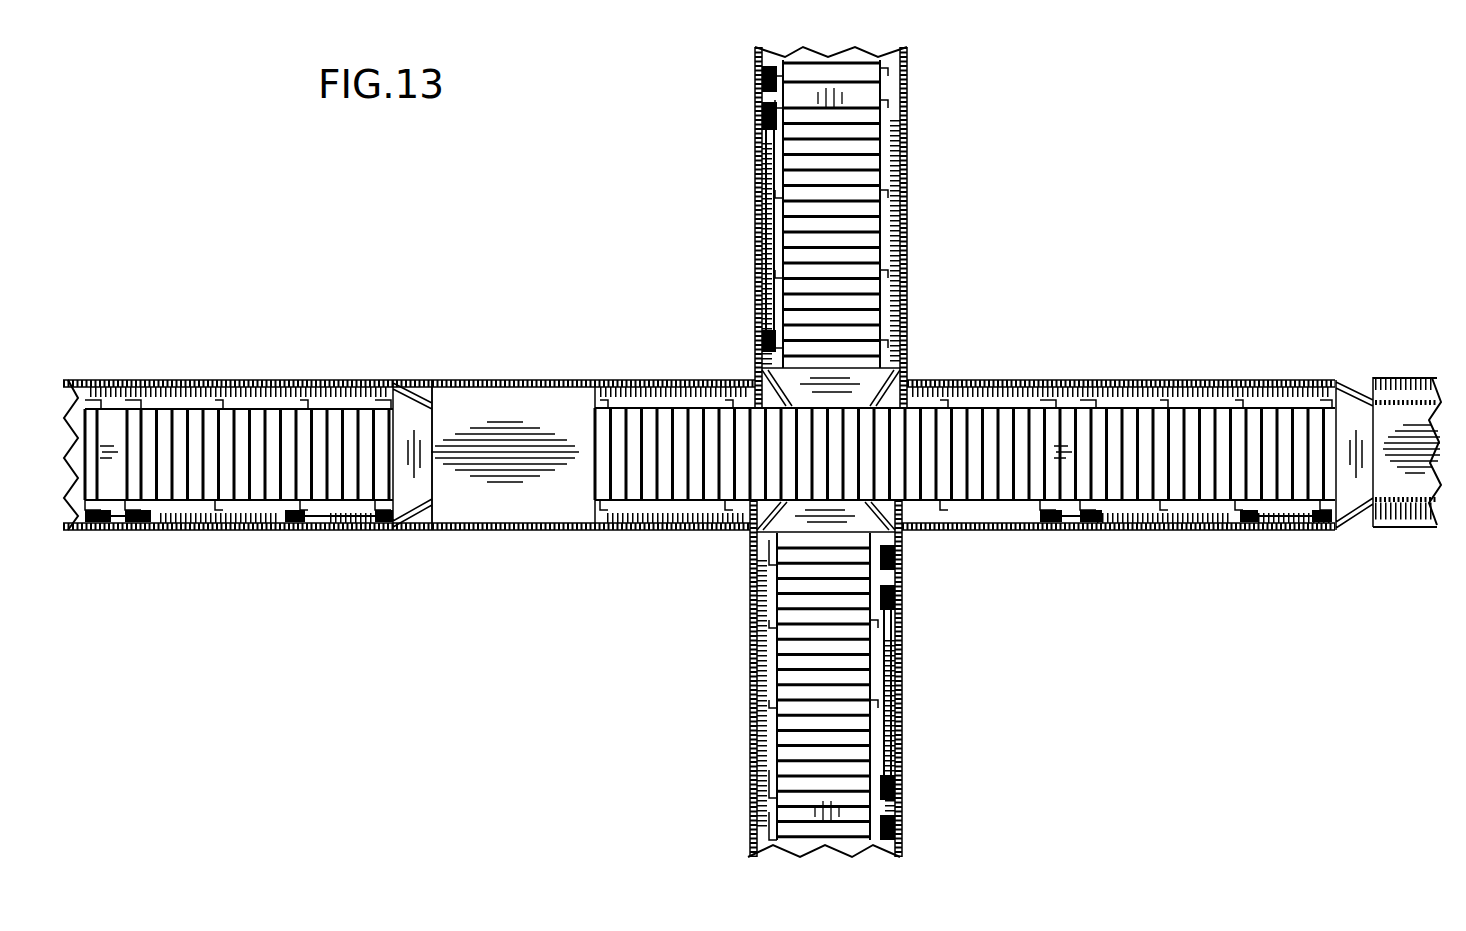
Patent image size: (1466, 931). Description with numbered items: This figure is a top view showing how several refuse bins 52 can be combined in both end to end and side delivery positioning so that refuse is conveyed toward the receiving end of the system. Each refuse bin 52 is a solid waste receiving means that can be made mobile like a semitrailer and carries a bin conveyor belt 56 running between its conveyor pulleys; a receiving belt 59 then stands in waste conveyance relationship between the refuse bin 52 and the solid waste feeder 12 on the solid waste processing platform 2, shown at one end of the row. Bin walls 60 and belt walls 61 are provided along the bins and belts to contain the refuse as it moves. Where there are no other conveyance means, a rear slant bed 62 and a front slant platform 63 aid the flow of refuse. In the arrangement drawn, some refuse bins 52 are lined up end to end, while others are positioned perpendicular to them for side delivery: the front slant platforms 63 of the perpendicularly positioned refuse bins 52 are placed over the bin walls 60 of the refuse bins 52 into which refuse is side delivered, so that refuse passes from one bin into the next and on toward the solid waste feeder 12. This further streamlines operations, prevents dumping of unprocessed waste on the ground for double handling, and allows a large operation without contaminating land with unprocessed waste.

The solid waste processing platform 2 is at (1430, 523).
The solid waste feeder 12 is at (1410, 423).
The refuse bin 52 is at (271, 268).
The bin conveyor belt 56 is at (792, 64).
The receiving belt 59 is at (840, 185).
The bin wall 60 is at (906, 82).
The belt wall 61 is at (400, 386).
The rear slant bed 62 is at (516, 482).
The front slant platform 63 is at (418, 428).